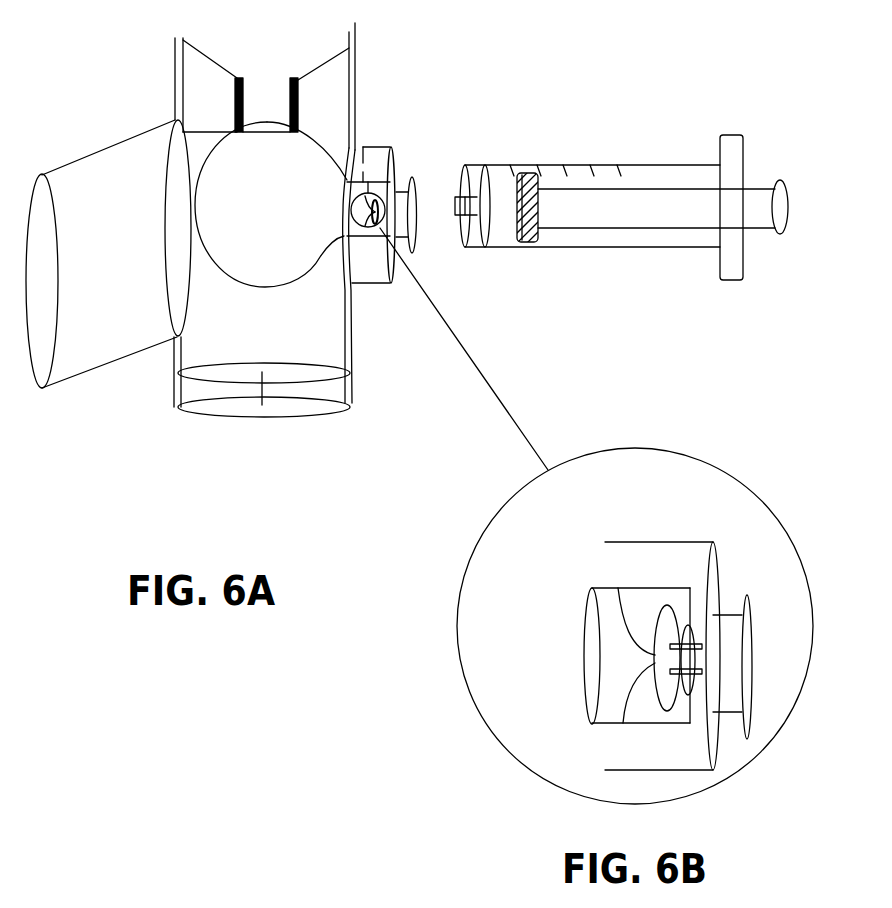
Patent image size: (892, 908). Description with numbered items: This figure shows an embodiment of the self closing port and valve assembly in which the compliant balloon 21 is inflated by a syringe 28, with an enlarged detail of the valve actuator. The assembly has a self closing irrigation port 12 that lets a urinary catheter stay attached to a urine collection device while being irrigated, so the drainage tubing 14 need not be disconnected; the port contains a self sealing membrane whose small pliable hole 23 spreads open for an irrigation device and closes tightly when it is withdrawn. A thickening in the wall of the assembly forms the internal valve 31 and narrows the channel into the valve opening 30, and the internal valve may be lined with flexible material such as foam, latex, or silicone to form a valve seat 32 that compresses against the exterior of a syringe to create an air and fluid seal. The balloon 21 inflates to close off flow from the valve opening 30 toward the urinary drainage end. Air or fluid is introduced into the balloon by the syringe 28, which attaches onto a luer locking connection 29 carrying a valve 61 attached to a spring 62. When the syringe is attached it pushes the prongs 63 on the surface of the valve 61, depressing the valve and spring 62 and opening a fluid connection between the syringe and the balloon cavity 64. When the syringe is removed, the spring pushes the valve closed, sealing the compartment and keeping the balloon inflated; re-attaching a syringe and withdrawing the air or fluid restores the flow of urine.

In FIG. 6A, the self closing irrigation port 12 is at (338, 388).
In FIG. 6A, the urine collection device drainage tubing 14 is at (95, 200).
In FIG. 6A, the balloon 21 is at (268, 263).
In FIG. 6A, the pliable hole 23 is at (260, 388).
In FIG. 6A, the syringe 28 is at (590, 240).
In FIG. 6A, the luer locking connection 29 is at (409, 232).
In FIG. 6B, the luer locking connection 29 is at (753, 615).
In FIG. 6A, the valve opening 30 is at (275, 98).
In FIG. 6A, the internal valve 31 is at (337, 117).
In FIG. 6A, the valve seat 32 is at (237, 102).
In FIG. 6A, the valve 61 is at (447, 308).
In FIG. 6B, the valve 61 is at (670, 627).
In FIG. 6B, the spring 62 is at (625, 625).
In FIG. 6B, the prongs 63 is at (688, 625).
In FIG. 6B, the balloon cavity 64 is at (592, 660).